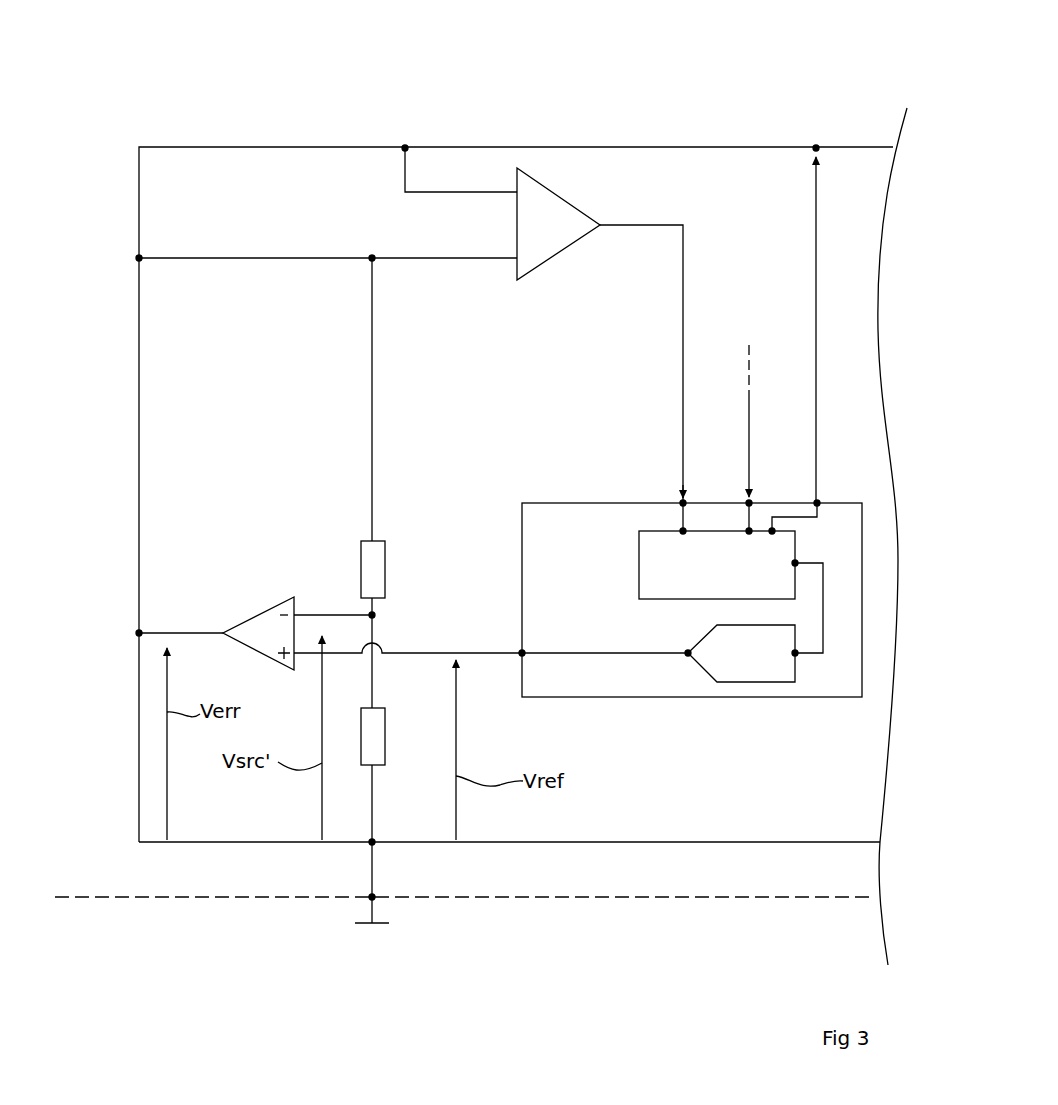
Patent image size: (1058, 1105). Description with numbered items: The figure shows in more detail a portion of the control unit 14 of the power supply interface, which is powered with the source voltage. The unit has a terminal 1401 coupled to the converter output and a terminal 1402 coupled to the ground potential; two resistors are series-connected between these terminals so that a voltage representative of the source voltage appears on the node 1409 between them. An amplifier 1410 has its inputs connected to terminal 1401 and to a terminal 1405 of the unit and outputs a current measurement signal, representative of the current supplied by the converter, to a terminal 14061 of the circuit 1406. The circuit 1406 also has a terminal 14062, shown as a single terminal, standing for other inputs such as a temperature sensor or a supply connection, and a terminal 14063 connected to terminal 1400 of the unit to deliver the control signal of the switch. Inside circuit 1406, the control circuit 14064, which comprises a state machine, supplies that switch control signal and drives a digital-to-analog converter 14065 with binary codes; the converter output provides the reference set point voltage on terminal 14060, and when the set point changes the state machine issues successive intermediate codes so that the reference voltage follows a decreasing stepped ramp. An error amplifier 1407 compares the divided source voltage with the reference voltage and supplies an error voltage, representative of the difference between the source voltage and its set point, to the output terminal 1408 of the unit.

The control unit 14 is at (226, 82).
The terminal 1400 is at (816, 148).
The terminal 1401 is at (139, 258).
The terminal 1402 is at (372, 842).
The terminal 1405 is at (405, 148).
The circuit 1406 is at (543, 500).
The error amplifier 1407 is at (251, 613).
The output terminal 1408 is at (139, 633).
The node 1409 is at (372, 615).
The amplifier 1410 is at (556, 263).
The terminal 14060 is at (522, 653).
The terminal 14061 is at (683, 503).
The terminal 14062 is at (749, 503).
The terminal 14063 is at (817, 503).
The control circuit 14064 is at (651, 528).
The digital-to-analog converter 14065 is at (762, 686).